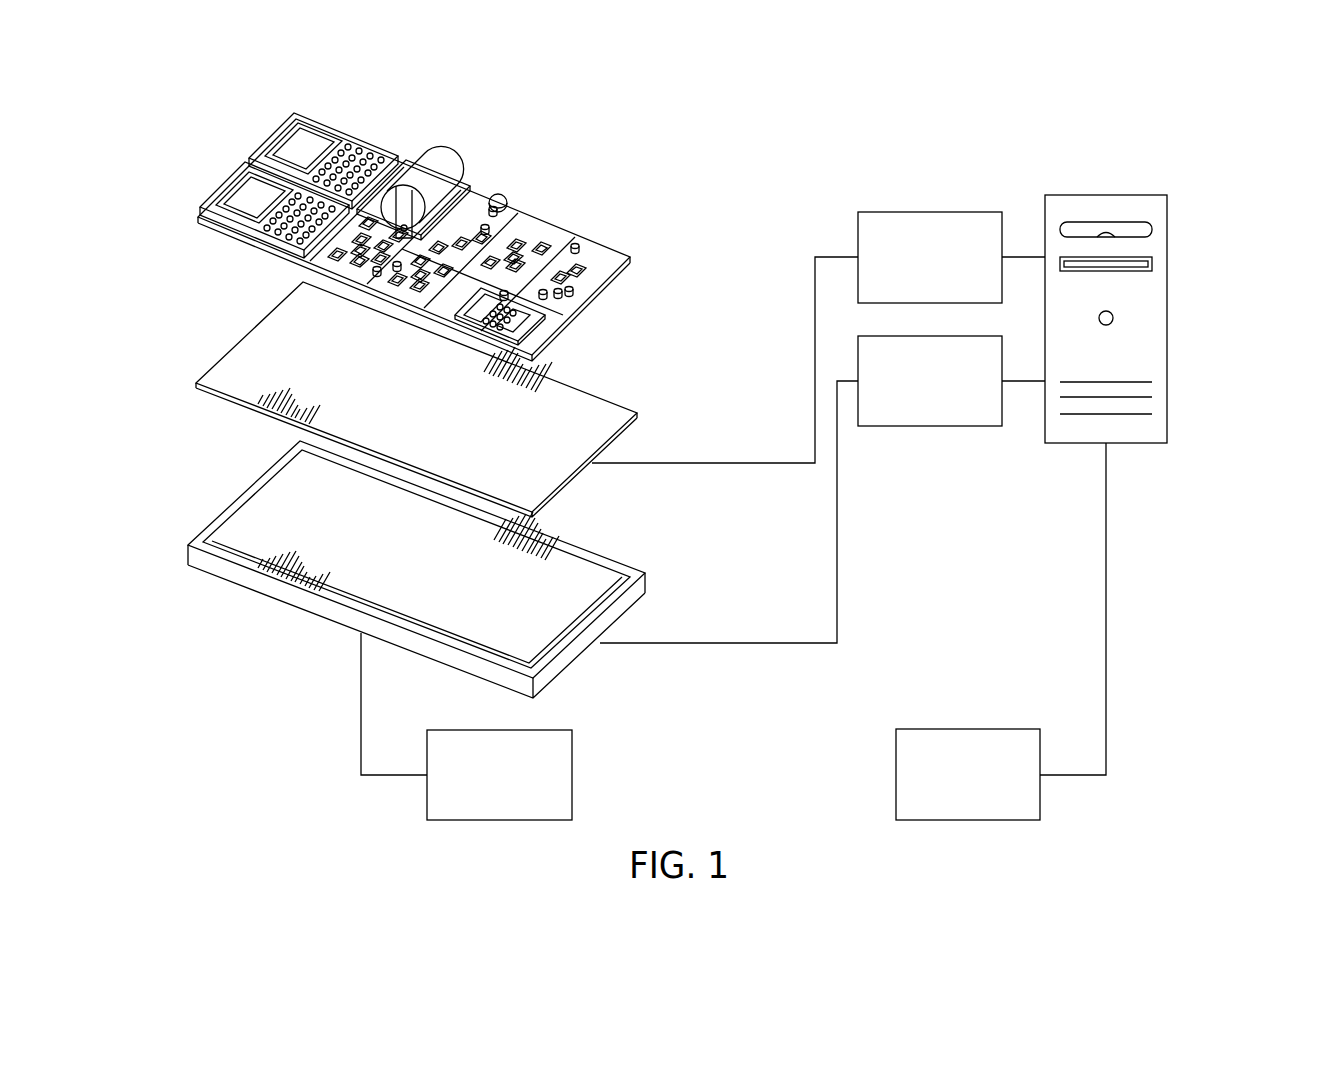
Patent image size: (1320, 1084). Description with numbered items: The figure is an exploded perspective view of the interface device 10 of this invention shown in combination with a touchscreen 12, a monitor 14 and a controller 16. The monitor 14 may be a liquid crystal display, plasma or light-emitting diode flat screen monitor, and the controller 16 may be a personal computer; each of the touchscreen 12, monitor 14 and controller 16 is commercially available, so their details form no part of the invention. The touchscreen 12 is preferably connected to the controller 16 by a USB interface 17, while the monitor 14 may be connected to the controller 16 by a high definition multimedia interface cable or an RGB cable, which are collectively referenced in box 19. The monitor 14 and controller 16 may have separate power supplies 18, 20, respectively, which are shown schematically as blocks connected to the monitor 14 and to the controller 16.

The interface device 10 is at (596, 172).
The touchscreen 12 is at (589, 392).
The monitor 14 is at (606, 558).
The controller 16 is at (1168, 318).
The USB interface 17 is at (928, 212).
The power supply 18 is at (573, 773).
The box 19 is at (930, 428).
The power supply 20 is at (968, 729).